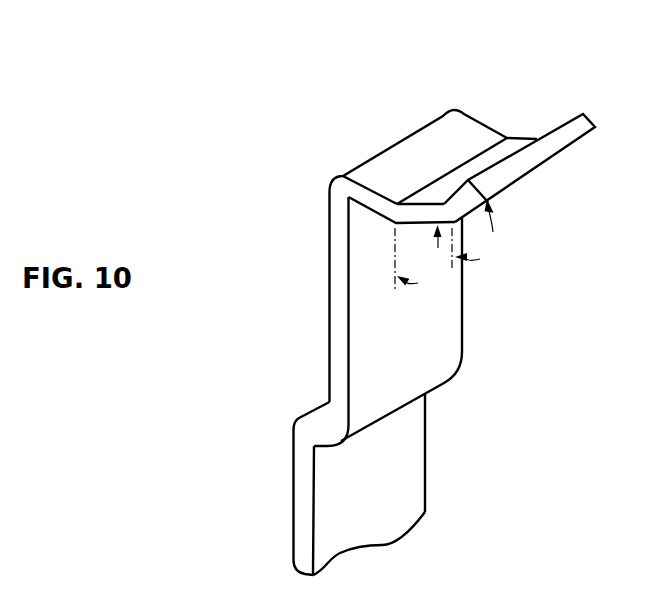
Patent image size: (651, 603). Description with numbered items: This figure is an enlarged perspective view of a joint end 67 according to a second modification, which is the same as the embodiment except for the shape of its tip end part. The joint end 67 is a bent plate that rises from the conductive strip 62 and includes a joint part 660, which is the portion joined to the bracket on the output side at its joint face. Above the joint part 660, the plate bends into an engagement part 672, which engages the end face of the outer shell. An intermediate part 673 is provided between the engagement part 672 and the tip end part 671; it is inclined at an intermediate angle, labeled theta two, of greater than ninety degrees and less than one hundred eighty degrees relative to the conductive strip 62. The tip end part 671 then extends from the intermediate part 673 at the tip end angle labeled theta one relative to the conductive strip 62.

The joint end 67 is at (408, 236).
The joint part 660 is at (334, 328).
The engagement part 672 is at (390, 167).
The intermediate part 673 is at (477, 166).
The tip end part 671 is at (514, 177).
The conductive strip 62 is at (303, 509).